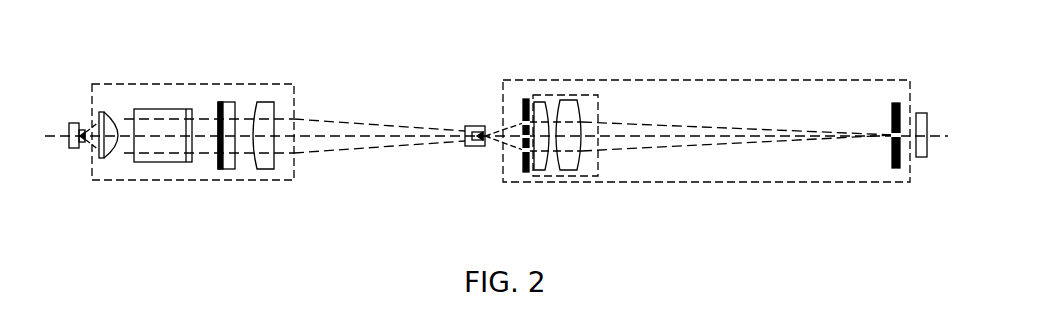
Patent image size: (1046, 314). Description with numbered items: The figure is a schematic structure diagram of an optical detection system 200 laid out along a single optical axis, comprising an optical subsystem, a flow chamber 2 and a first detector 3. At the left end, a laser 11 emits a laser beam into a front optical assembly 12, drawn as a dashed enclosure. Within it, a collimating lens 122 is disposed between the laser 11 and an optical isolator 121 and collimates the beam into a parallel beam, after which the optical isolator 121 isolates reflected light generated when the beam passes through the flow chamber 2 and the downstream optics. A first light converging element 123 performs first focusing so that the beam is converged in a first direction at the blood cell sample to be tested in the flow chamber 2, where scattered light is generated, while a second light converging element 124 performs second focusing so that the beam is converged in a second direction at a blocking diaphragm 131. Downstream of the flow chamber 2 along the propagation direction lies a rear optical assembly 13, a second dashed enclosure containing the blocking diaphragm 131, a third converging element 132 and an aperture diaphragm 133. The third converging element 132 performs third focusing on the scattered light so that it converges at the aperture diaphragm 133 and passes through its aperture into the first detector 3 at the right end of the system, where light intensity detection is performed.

The optical detection system 200 is at (437, 63).
The laser 11 is at (75, 149).
The front optical assembly 12 is at (294, 94).
The optical isolator 121 is at (170, 162).
The collimating lens 122 is at (108, 110).
The first light converging element 123 is at (227, 169).
The second light converging element 124 is at (272, 169).
The flow chamber 2 is at (468, 147).
The rear optical assembly 13 is at (910, 100).
The blocking diaphragm 131 is at (525, 172).
The third converging element 132 is at (597, 163).
The aperture diaphragm 133 is at (892, 168).
The first detector 3 is at (922, 157).